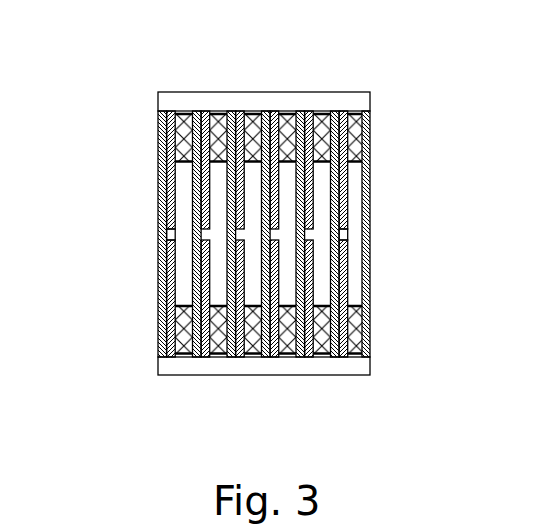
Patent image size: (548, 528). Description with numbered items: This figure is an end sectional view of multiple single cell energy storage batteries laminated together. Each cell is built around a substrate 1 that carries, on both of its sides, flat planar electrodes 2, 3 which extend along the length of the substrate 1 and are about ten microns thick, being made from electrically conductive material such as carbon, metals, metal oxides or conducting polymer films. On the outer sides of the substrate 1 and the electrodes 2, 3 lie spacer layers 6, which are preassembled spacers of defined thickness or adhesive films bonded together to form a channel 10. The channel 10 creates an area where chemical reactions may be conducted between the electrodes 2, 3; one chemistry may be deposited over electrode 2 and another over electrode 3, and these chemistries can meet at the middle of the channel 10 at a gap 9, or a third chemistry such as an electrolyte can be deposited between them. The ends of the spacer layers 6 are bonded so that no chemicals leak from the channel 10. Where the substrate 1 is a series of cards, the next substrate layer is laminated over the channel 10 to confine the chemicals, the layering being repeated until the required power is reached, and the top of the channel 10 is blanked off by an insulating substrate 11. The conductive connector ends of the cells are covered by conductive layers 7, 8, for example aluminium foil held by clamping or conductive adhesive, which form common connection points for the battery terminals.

The substrate 1 is at (157, 125).
The electrode 2 is at (170, 177).
The electrode 3 is at (170, 285).
The spacer layer 6 is at (358, 134).
The conductive layer 7 is at (258, 91).
The conductive layer 8 is at (267, 376).
The gap 9 is at (170, 233).
The channel 10 is at (356, 229).
The insulating substrate 11 is at (375, 270).